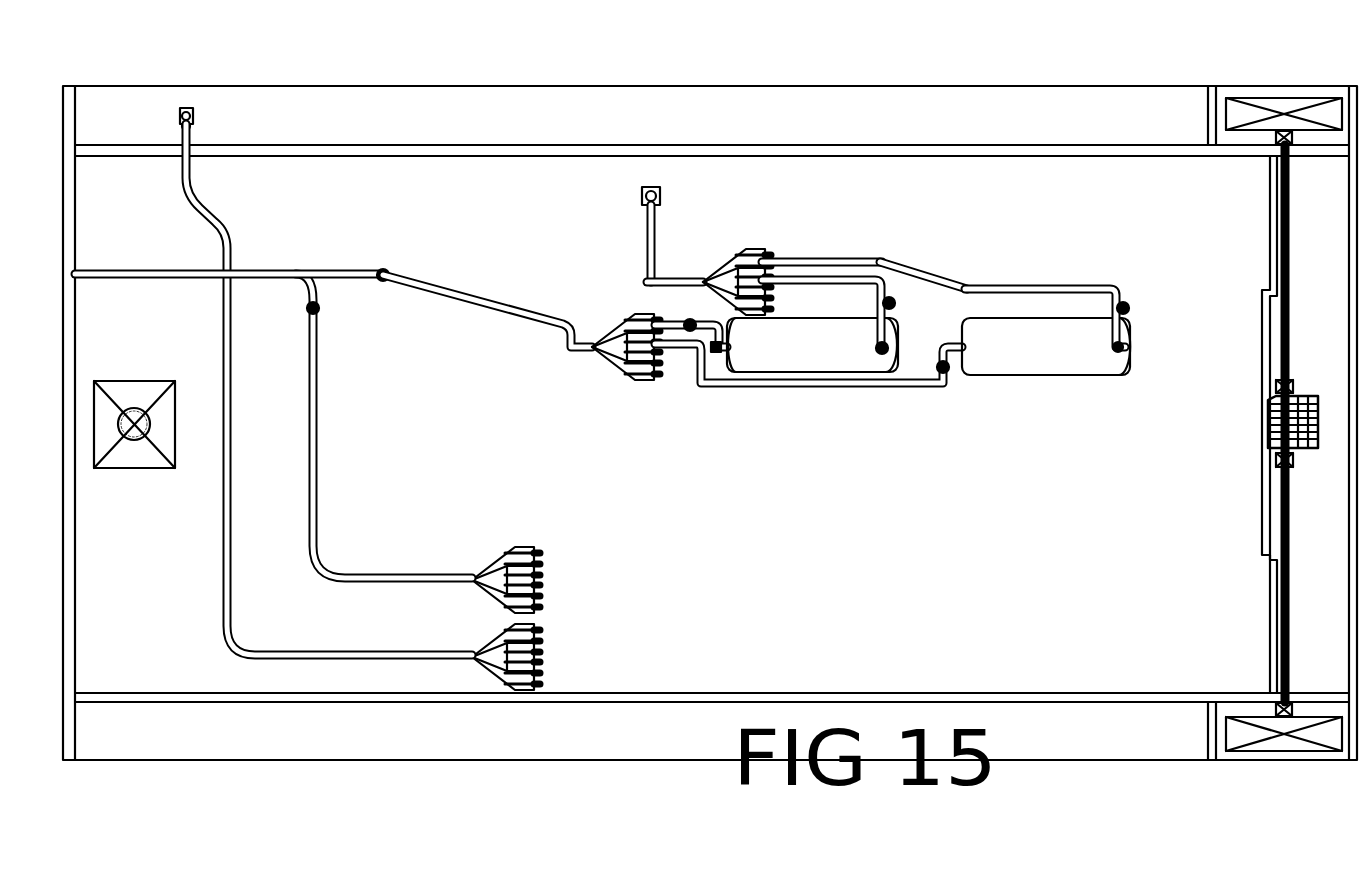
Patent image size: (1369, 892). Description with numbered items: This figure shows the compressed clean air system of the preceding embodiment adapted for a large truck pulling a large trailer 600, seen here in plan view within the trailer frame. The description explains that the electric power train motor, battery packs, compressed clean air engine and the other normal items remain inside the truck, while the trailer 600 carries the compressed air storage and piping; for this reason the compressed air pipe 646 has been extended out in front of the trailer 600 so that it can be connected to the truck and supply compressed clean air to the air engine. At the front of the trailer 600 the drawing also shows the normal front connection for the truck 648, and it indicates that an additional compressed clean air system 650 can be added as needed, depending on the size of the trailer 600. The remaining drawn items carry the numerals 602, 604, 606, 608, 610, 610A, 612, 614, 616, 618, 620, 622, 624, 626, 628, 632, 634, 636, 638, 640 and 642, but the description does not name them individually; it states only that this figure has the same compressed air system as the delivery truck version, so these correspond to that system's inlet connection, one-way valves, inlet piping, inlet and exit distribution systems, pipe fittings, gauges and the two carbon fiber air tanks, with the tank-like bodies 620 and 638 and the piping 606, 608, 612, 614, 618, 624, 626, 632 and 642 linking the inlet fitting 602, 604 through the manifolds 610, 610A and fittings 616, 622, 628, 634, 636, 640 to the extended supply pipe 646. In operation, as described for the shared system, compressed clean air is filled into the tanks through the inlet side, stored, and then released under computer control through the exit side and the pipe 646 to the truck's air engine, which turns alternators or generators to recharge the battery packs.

The trailer 600 is at (697, 423).
The inlet fitting 602 is at (643, 197).
The inlet connector 604 is at (687, 188).
The inlet conduit 606 is at (647, 220).
The conduit 608 is at (650, 277).
The manifold 610 is at (780, 225).
The second manifold 610A is at (607, 333).
The outlet line 612 is at (670, 403).
The conduit 614 is at (865, 270).
The fitting 616 is at (893, 303).
The conduit 618 is at (882, 347).
The first tank 620 is at (820, 360).
The fitting 622 is at (717, 350).
The conduit 624 is at (690, 325).
The conduit 626 is at (503, 313).
The junction 628 is at (383, 275).
The conduit 632 is at (1100, 283).
The fitting 634 is at (1123, 308).
The tank inlet 636 is at (1127, 352).
The second tank 638 is at (1077, 370).
The fitting 640 is at (947, 367).
The return conduit 642 is at (917, 388).
The compressed air pipe 646 is at (120, 280).
The front connection for the truck 648 is at (138, 459).
The additional compressed clean air system 650 is at (560, 615).